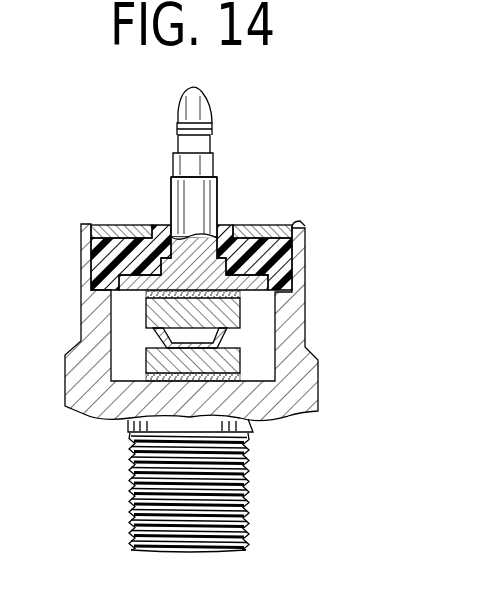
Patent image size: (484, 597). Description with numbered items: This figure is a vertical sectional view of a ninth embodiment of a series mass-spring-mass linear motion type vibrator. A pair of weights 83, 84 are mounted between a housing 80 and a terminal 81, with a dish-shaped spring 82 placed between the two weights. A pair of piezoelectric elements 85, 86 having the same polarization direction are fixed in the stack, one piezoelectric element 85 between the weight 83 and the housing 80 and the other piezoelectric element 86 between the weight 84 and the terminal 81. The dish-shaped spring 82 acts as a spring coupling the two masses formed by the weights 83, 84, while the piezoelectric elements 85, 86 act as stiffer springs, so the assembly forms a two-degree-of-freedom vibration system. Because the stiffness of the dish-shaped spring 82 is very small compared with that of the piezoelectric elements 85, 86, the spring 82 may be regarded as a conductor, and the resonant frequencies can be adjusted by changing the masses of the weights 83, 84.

The housing 80 is at (92, 408).
The terminal 81 is at (177, 194).
The dish-shaped spring 82 is at (228, 338).
The weight 83 is at (238, 363).
The weight 84 is at (240, 313).
The piezoelectric element 85 is at (233, 381).
The piezoelectric element 86 is at (241, 272).